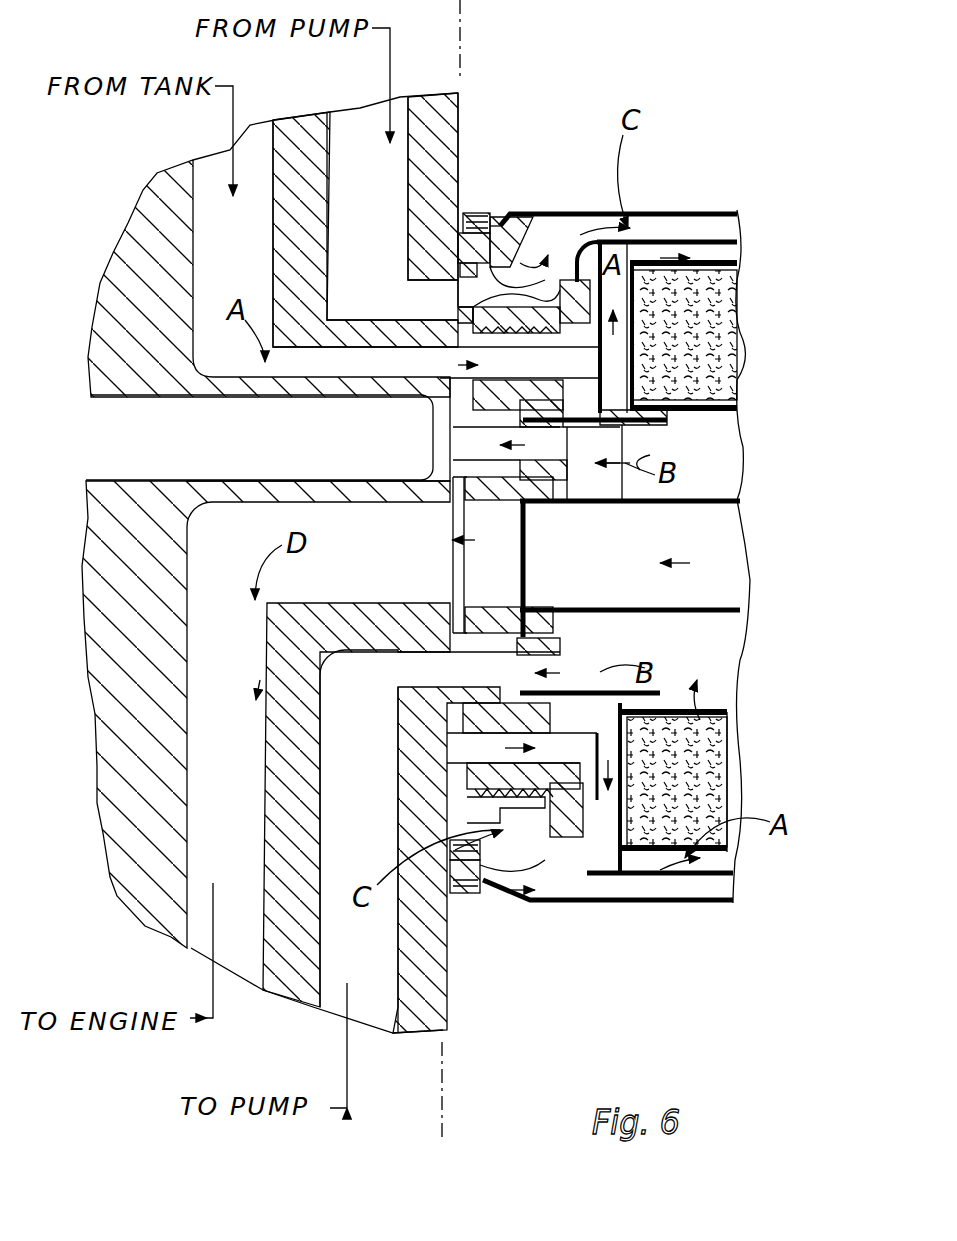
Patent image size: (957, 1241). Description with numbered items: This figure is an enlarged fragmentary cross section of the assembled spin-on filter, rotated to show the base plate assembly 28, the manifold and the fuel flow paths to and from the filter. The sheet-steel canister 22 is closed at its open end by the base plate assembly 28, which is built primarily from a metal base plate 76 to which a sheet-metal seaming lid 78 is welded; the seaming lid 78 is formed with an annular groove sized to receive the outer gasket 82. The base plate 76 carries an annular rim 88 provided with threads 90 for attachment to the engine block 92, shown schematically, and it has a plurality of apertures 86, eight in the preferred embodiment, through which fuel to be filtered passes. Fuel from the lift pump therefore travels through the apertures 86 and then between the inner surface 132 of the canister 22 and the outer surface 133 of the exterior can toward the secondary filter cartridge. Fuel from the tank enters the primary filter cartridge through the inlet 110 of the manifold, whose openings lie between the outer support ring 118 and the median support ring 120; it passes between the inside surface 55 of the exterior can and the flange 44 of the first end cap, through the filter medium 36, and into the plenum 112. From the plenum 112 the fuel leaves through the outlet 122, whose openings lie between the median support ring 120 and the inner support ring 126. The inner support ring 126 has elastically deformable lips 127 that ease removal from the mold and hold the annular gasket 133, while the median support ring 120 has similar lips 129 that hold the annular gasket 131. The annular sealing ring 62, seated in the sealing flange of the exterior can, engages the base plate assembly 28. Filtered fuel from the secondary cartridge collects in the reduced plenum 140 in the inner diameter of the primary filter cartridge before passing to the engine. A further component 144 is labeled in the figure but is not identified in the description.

The canister 22 is at (650, 213).
The base plate assembly 28 is at (583, 173).
The filter medium 36 is at (710, 347).
The flange 44 is at (737, 262).
The inside surface 55 is at (700, 240).
The annular sealing ring 62 is at (590, 840).
The base plate 76 is at (515, 248).
The seaming lid 78 is at (470, 240).
The outer gasket 82 is at (466, 214).
The apertures 86 is at (490, 885).
The annular rim 88 is at (475, 312).
The threads 90 is at (418, 390).
The engine block 92 is at (352, 393).
The inlet 110 is at (571, 378).
The plenum 112 is at (730, 457).
The outer support ring 118 is at (547, 870).
The median support ring 120 is at (552, 720).
The outlet 122 is at (560, 445).
The inner support ring 126 is at (558, 642).
The elastically deformable lips 127 is at (530, 600).
The elastically deformable lips 129 is at (505, 745).
The annular gasket 131 is at (473, 720).
The inner surface 132 is at (682, 902).
The annular gasket 133 is at (466, 606).
The reduced plenum 140 is at (723, 548).
The cup 144 is at (513, 548).